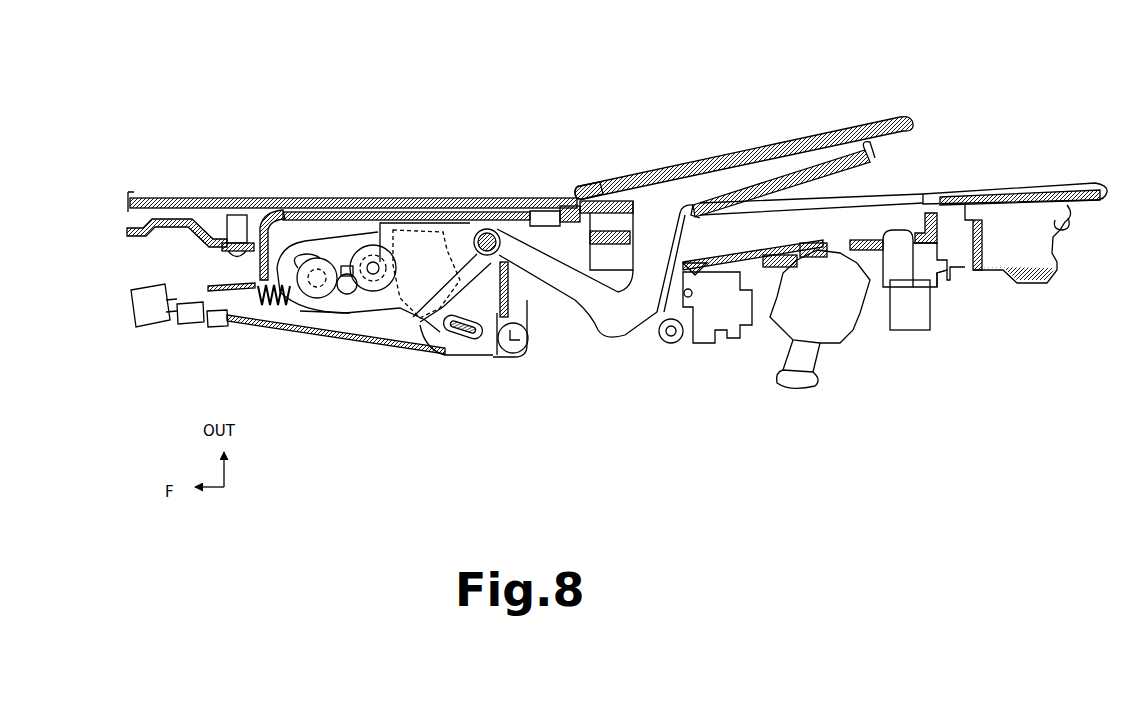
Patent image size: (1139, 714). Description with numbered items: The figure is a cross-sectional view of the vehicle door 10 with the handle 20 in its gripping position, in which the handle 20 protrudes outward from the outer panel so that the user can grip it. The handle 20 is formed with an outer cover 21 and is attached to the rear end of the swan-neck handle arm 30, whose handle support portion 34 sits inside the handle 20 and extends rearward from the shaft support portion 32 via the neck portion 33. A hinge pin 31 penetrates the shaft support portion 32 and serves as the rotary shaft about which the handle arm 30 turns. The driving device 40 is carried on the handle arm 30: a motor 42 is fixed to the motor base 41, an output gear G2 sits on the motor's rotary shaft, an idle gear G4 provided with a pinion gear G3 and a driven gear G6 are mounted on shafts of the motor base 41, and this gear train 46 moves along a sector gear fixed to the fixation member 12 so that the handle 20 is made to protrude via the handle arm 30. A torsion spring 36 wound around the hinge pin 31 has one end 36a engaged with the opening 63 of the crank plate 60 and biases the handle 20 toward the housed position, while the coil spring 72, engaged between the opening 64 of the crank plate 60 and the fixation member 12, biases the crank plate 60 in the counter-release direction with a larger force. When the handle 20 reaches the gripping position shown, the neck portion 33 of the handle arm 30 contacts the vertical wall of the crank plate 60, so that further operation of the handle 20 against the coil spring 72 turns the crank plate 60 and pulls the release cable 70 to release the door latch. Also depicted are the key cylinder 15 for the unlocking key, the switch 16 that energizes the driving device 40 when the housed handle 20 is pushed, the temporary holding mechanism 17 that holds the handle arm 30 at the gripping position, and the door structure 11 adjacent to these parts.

The vehicle door 10 is at (348, 69).
The roof panel 11 is at (1011, 190).
The fixation member 12 is at (213, 307).
The key cylinder 15 is at (853, 336).
The switch 16 is at (916, 345).
The temporary holding mechanism 17 is at (718, 360).
The handle 20 is at (744, 150).
The outer cover 21 is at (590, 188).
The handle arm 30 is at (553, 275).
The hinge pin 31 is at (490, 228).
The shaft support portion 32 is at (468, 224).
The neck portion 33 is at (595, 318).
The handle support portion 34 is at (681, 190).
The torsion spring 36 is at (507, 224).
The one end of torsion spring 36a is at (528, 327).
The driving device 40 is at (298, 318).
The motor base 41 is at (412, 199).
The motor 42 is at (283, 210).
The gear train 46 is at (330, 318).
The crank plate 60 is at (474, 368).
The opening 63 is at (491, 340).
The opening 64 is at (457, 341).
The release cable 70 is at (363, 344).
The coil spring 72 is at (235, 283).
The output gear G2 is at (311, 262).
The pinion gear G3 is at (347, 268).
The idle gear G4 is at (344, 265).
The driven gear G6 is at (374, 228).